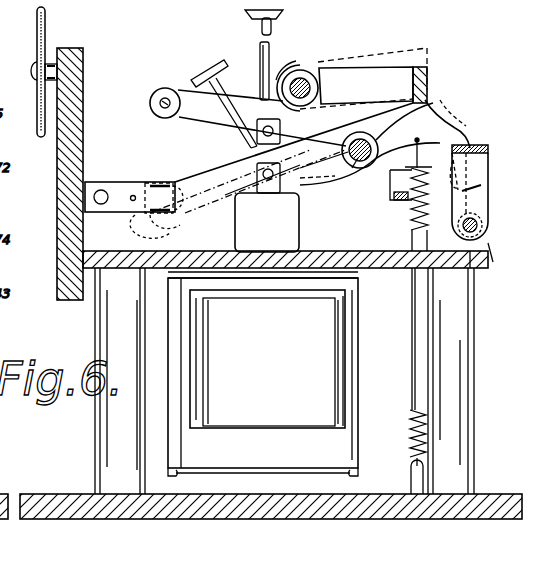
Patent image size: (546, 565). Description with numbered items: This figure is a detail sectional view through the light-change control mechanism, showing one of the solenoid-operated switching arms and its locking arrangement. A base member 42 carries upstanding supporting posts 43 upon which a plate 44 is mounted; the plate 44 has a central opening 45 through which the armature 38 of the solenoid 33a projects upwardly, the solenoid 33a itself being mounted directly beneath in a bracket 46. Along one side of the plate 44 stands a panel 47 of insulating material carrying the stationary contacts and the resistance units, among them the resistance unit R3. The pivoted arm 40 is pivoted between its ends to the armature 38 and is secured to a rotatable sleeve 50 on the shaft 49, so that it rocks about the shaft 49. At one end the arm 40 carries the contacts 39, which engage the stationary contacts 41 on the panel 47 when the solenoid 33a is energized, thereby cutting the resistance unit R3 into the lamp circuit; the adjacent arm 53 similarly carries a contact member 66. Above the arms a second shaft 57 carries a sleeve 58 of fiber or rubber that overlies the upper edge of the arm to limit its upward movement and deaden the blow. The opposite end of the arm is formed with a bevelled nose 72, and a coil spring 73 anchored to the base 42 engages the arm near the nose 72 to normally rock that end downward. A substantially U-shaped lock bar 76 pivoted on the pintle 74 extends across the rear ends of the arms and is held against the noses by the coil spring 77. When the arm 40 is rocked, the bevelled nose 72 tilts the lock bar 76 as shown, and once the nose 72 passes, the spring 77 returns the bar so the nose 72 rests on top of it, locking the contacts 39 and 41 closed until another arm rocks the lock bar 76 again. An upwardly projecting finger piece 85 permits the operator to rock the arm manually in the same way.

The resistance unit R3 is at (38, 50).
The upstanding panel 47 is at (72, 126).
The contact member 66 is at (163, 101).
The pivoted arm 53 is at (202, 107).
The finger piece 85 is at (212, 62).
The second shaft 57 is at (300, 78).
The sleeve 58 is at (318, 80).
The nose 72 is at (455, 133).
The lock bar 76 is at (472, 145).
The coil spring 77 is at (468, 192).
The pintle 74 is at (483, 226).
The stationary contact 41 is at (165, 184).
The pivoted arm 40 is at (198, 178).
The central opening 45 is at (188, 236).
The contact 39 is at (190, 225).
The armature 38 is at (268, 186).
The shaft 49 is at (355, 160).
The rotatable sleeve 50 is at (362, 210).
The plate 44 is at (337, 251).
The solenoid 33a is at (310, 375).
The bracket 46 is at (335, 407).
The supporting post 43 is at (117, 405).
The coil spring 73 is at (413, 428).
The base member 42 is at (480, 496).